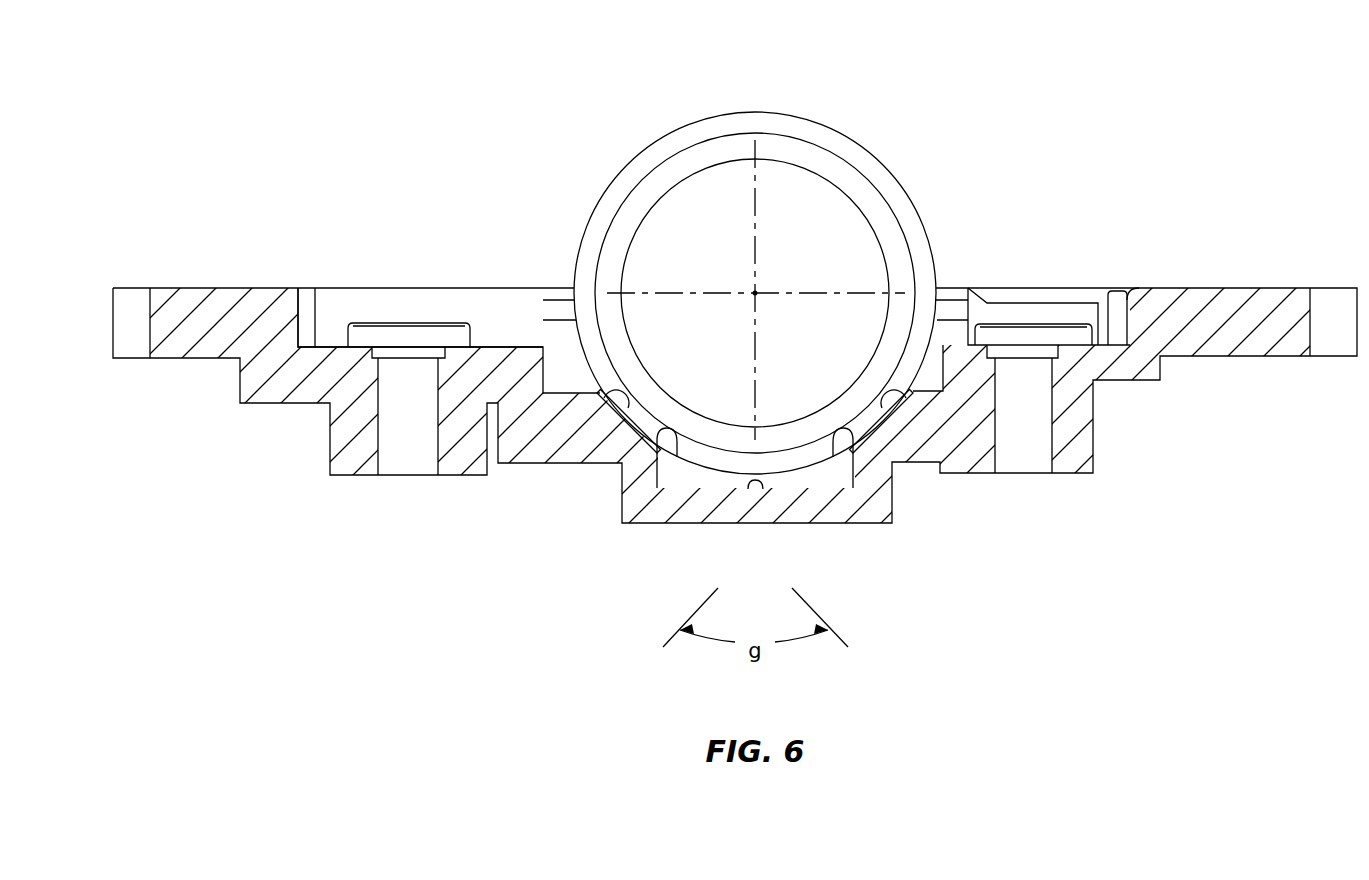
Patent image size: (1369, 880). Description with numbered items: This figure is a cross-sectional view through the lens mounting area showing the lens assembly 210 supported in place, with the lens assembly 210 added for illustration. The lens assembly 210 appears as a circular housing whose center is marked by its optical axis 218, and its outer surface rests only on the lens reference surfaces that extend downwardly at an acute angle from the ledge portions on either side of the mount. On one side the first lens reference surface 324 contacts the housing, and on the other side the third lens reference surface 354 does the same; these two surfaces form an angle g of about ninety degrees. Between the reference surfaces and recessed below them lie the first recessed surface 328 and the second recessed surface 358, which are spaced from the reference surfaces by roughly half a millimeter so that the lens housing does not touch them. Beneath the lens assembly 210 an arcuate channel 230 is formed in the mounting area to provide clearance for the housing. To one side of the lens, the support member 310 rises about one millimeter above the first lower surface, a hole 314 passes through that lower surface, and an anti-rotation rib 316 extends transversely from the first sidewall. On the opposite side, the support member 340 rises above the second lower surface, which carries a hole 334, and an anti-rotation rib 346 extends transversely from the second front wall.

The lens assembly 210 is at (928, 96).
The optical axis 218 is at (755, 293).
The arcuate channel 230 is at (757, 490).
The support member 310 is at (1035, 337).
The hole 314 is at (1022, 455).
The anti-rotation rib 316 is at (1117, 305).
The first lens reference surface 324 is at (908, 400).
The first recessed surface 328 is at (838, 455).
The hole 334 is at (410, 456).
The support member 340 is at (373, 337).
The anti-rotation rib 346 is at (403, 298).
The third lens reference surface 354 is at (608, 407).
The second recessed surface 358 is at (673, 455).